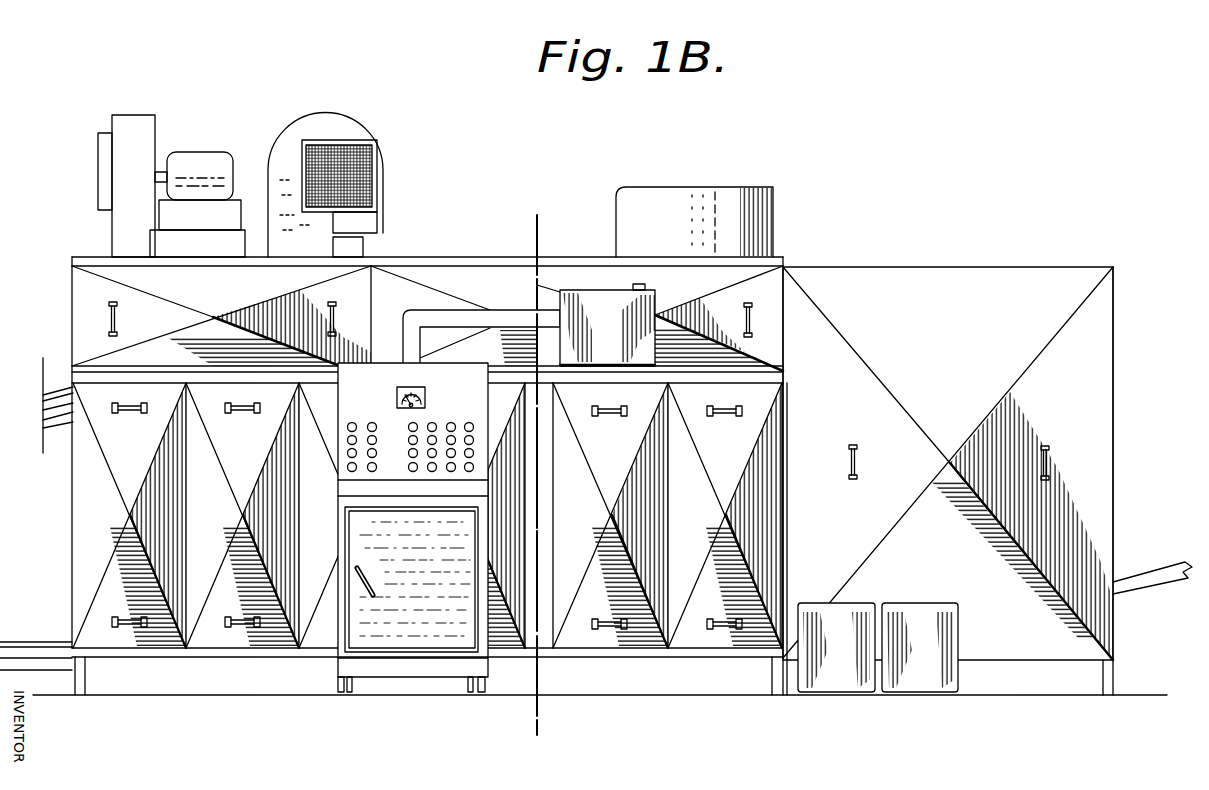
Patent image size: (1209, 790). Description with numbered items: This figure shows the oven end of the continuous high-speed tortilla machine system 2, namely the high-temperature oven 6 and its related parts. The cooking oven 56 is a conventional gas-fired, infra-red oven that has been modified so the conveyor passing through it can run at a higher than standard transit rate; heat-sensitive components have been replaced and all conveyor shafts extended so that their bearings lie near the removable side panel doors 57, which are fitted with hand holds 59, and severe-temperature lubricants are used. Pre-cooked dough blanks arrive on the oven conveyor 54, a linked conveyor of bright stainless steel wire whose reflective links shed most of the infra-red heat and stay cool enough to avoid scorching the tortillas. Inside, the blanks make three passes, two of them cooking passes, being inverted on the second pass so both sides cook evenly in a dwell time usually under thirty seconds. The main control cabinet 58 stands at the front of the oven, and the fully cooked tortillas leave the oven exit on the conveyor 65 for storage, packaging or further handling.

The tortilla machine system 2 is at (943, 84).
The high-temperature oven 6 is at (458, 257).
The oven conveyor 54 is at (62, 422).
The cooking oven 56 is at (213, 633).
The removable side panel doors 57 is at (208, 528).
The main control cabinet 58 is at (438, 638).
The hand holds 59 is at (134, 413).
The conveyor 65 is at (1148, 575).